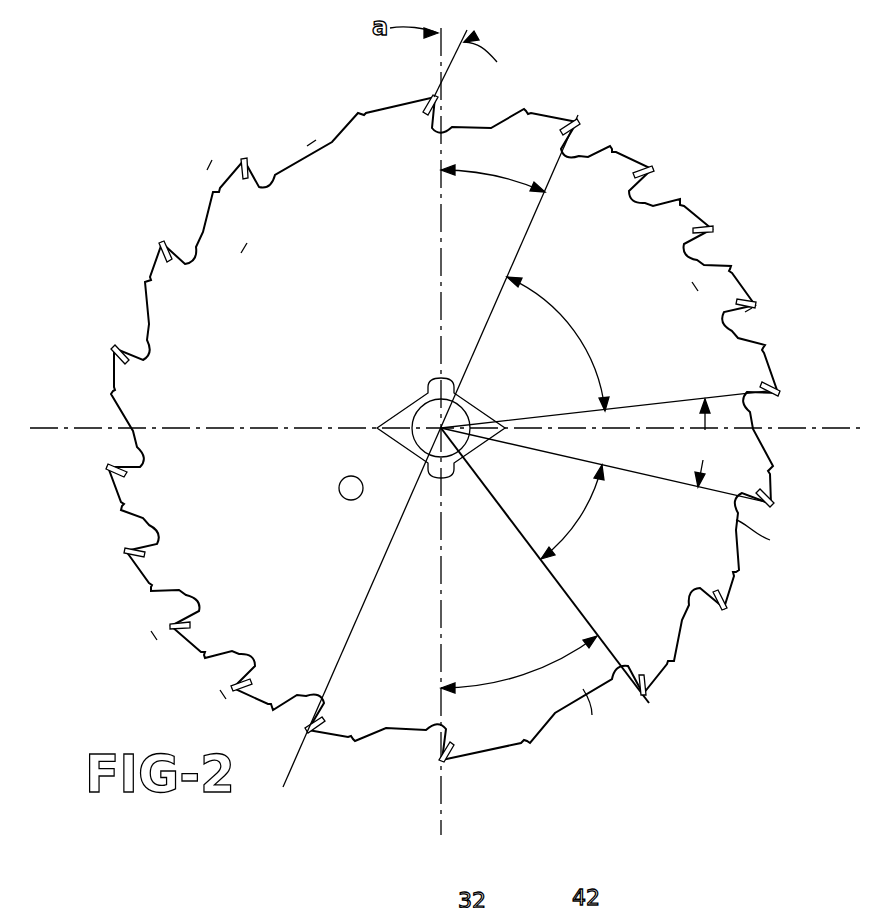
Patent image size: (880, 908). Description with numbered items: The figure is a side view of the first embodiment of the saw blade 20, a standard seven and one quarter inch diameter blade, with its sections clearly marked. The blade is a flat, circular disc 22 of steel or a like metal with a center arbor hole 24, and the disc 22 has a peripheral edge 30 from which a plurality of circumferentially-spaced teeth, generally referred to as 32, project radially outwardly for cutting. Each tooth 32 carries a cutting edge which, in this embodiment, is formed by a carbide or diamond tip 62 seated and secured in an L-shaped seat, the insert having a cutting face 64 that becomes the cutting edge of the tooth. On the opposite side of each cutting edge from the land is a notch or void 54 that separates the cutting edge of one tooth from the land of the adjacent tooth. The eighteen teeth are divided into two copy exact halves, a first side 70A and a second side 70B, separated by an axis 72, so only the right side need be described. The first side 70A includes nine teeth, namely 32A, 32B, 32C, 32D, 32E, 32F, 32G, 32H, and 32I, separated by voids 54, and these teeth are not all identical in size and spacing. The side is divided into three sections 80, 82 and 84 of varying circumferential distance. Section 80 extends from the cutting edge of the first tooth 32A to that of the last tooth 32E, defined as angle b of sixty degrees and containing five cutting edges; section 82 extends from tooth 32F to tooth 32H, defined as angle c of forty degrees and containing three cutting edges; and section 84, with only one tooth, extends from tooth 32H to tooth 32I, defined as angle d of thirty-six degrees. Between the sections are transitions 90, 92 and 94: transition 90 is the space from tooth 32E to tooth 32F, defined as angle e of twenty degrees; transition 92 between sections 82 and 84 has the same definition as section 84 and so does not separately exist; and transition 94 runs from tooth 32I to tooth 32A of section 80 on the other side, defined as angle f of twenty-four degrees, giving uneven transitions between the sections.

The saw blade 20 is at (282, 82).
The circular disc 22 is at (218, 322).
The center arbor hole 24 is at (419, 405).
The peripheral edge 30 is at (320, 156).
The tooth 32 is at (224, 172).
The first tooth of section 80 32A is at (578, 126).
The tooth 32B is at (652, 170).
The tooth 32C is at (712, 229).
The tooth 32D is at (755, 308).
The last tooth of section 80 32E is at (778, 392).
The first tooth of section 82 32F is at (770, 504).
The tooth 32G is at (724, 612).
The last tooth of section 82 32H is at (645, 698).
The only tooth of section 84 32I is at (446, 762).
The notch or void 54 is at (770, 540).
The carbide or diamond tip 62 is at (167, 627).
The cutting face 64 is at (174, 621).
The first side 70A is at (682, 296).
The second side 70B is at (258, 256).
The axis 72 is at (295, 758).
The section 80 is at (571, 343).
The section 82 is at (589, 514).
The section 84 is at (519, 644).
The transition 90 is at (675, 443).
The transition 92 is at (578, 610).
The transition 94 is at (493, 205).